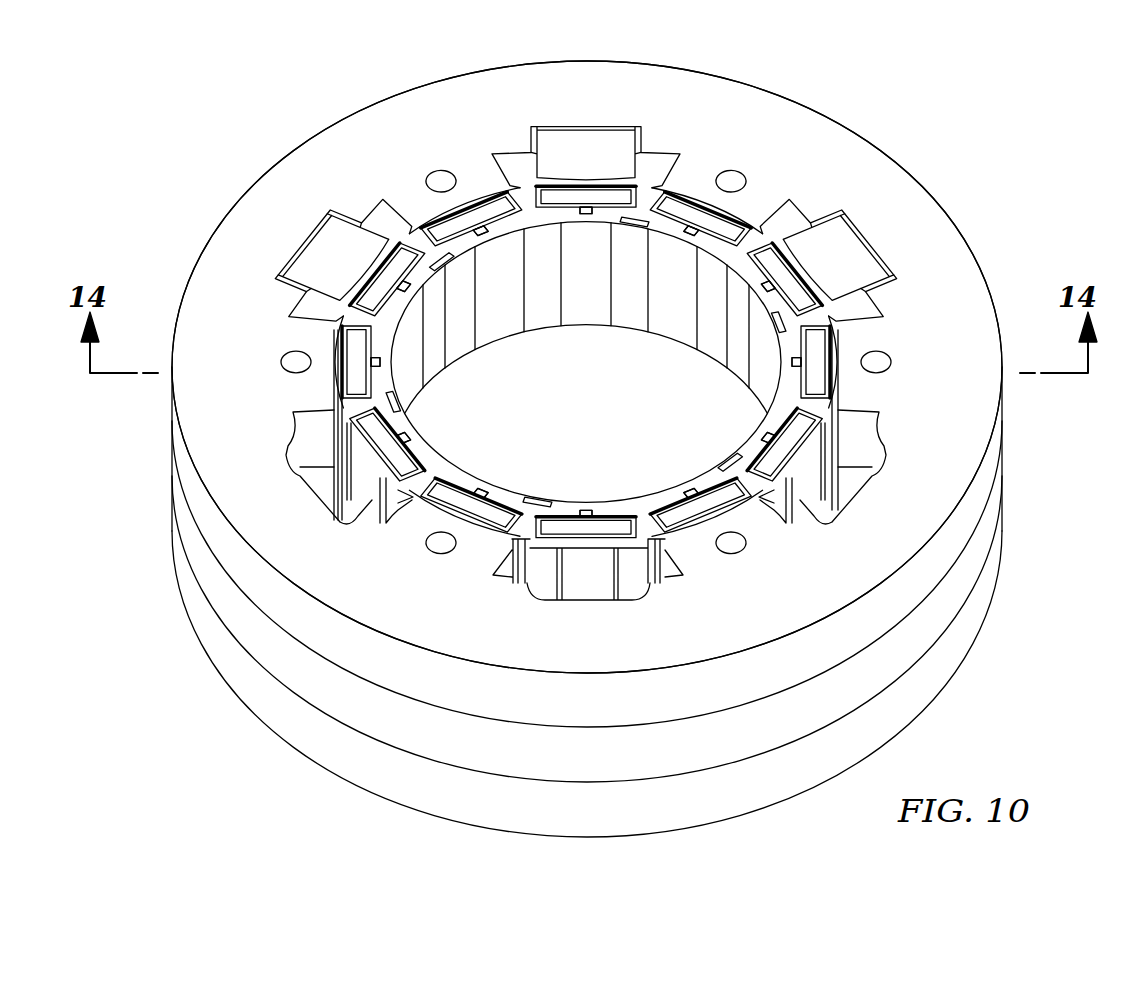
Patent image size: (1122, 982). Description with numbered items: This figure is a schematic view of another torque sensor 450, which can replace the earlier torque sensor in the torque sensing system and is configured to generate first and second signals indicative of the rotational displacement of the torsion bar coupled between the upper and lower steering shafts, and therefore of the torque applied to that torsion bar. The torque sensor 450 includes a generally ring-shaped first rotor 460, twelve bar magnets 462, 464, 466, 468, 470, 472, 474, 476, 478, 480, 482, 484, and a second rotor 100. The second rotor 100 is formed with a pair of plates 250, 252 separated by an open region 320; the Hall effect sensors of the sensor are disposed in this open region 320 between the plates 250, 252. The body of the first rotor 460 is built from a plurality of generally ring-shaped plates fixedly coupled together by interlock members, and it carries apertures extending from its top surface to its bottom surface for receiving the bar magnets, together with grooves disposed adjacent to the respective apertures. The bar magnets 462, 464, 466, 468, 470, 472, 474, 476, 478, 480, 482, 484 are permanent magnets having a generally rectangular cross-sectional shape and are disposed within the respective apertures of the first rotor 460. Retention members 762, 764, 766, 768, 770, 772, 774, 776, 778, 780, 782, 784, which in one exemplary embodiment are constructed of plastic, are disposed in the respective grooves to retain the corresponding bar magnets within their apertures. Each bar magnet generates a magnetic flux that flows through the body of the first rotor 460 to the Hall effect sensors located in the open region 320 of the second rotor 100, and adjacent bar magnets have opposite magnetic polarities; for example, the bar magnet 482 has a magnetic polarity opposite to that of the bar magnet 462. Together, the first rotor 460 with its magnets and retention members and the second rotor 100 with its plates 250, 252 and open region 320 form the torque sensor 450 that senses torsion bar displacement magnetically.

The torque sensor 450 is at (885, 130).
The second rotor 100 is at (927, 186).
The plate 250 is at (990, 470).
The open region 320 is at (990, 520).
The plate 252 is at (990, 565).
The first rotor 460 is at (728, 270).
The bar magnet 462 is at (665, 225).
The bar magnet 464 is at (770, 283).
The bar magnet 466 is at (800, 358).
The bar magnet 468 is at (770, 442).
The bar magnet 470 is at (700, 495).
The bar magnet 472 is at (590, 525).
The bar magnet 474 is at (470, 495).
The bar magnet 476 is at (402, 440).
The bar magnet 478 is at (372, 356).
The bar magnet 480 is at (415, 255).
The bar magnet 482 is at (518, 230).
The bar magnet 484 is at (607, 200).
The retention member 762 is at (688, 235).
The retention member 764 is at (764, 290).
The retention member 766 is at (792, 364).
The retention member 768 is at (762, 436).
The retention member 770 is at (688, 490).
The retention member 772 is at (583, 510).
The retention member 774 is at (483, 490).
The retention member 776 is at (410, 436).
The retention member 778 is at (380, 365).
The retention member 780 is at (410, 290).
The retention member 782 is at (483, 234).
The retention member 784 is at (587, 213).